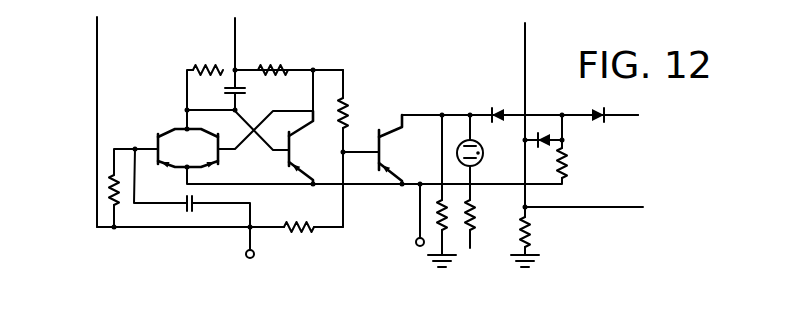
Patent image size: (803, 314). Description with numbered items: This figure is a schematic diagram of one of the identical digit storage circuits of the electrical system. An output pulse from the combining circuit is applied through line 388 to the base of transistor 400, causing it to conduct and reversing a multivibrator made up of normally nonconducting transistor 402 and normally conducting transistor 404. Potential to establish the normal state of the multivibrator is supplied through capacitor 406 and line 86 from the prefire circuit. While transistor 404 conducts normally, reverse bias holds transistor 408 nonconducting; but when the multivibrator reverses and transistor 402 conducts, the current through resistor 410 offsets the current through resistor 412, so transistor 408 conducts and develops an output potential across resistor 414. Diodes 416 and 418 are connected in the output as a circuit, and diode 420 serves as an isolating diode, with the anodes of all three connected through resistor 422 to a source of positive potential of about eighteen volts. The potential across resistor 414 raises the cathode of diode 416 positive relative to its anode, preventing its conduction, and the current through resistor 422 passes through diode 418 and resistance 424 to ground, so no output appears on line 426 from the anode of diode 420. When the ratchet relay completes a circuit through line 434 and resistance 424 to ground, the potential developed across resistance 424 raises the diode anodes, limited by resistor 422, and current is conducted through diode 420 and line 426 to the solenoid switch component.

The line 388 is at (96, 40).
The line 86 is at (238, 33).
The transistor 400 is at (155, 139).
The transistor 402 is at (218, 158).
The transistor 404 is at (288, 158).
The capacitor 406 is at (247, 91).
The transistor 408 is at (377, 141).
The resistor 410 is at (349, 113).
The resistor 412 is at (297, 235).
The resistor 414 is at (445, 232).
The diode 416 is at (503, 111).
The diode 418 is at (546, 148).
The isolating diode 420 is at (599, 123).
The resistor 422 is at (570, 166).
The resistance 424 is at (530, 237).
The line 426 is at (623, 114).
The line 434 is at (591, 208).